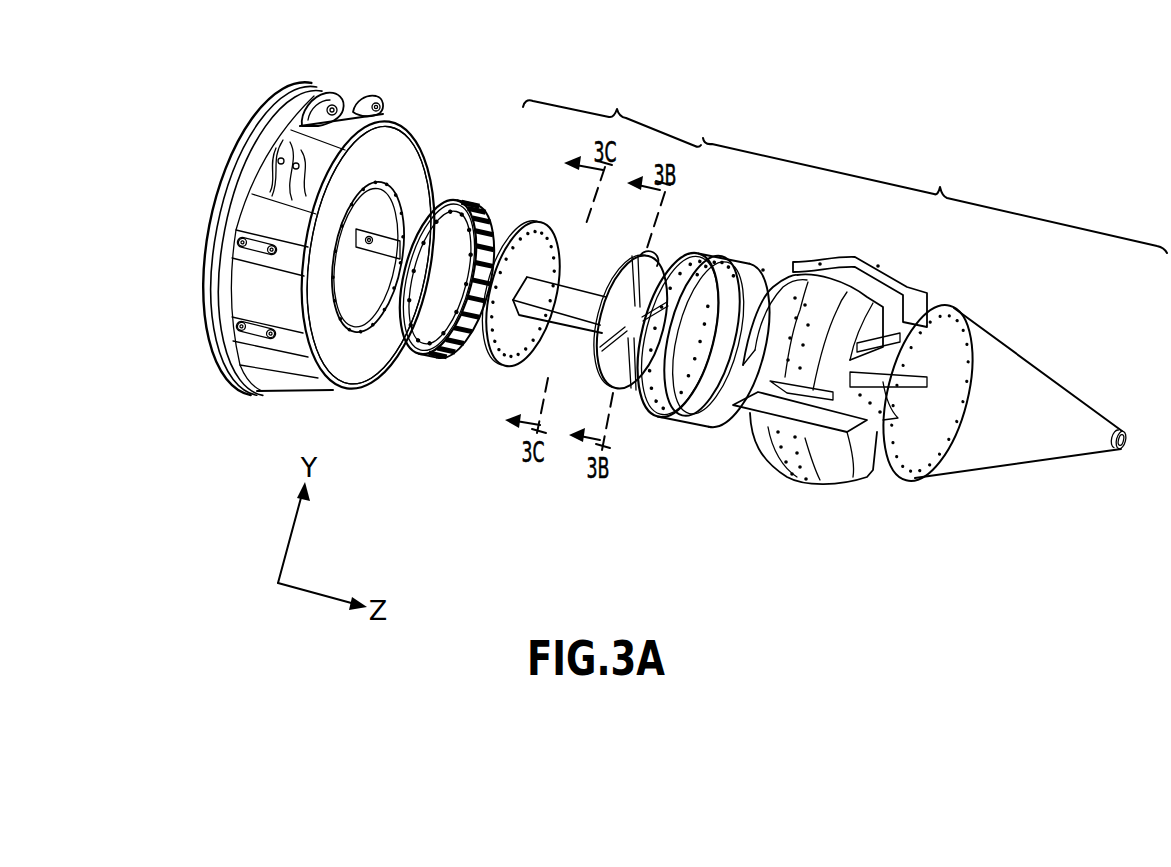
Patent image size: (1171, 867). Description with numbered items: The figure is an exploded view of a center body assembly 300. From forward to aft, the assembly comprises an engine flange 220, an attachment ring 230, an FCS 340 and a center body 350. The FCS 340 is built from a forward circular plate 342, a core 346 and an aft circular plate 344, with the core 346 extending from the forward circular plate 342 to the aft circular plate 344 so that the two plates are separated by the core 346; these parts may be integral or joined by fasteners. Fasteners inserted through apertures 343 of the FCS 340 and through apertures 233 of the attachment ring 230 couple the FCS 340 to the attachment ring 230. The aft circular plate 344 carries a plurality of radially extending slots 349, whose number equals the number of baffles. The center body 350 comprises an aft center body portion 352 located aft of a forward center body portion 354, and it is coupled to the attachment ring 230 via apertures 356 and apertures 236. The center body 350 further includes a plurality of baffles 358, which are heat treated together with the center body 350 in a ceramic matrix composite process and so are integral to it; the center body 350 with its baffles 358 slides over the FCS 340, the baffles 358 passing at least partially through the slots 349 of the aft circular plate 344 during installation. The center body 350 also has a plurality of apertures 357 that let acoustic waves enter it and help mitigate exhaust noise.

The center body assembly 300 is at (862, 104).
The engine flange 220 is at (388, 178).
The attachment ring 230 is at (469, 204).
The apertures 233 is at (447, 324).
The apertures 236 is at (397, 350).
The FCS 340 is at (612, 113).
The forward circular plate 342 is at (487, 353).
The apertures 343 is at (522, 229).
The core 346 is at (587, 333).
The aft circular plate 344 is at (626, 392).
The slots 349 is at (653, 250).
The center body 350 is at (935, 195).
The forward center body portion 354 is at (690, 417).
The apertures 356 is at (651, 372).
The apertures 357 is at (800, 475).
The baffles 358 is at (907, 282).
The aft center body portion 352 is at (1036, 460).